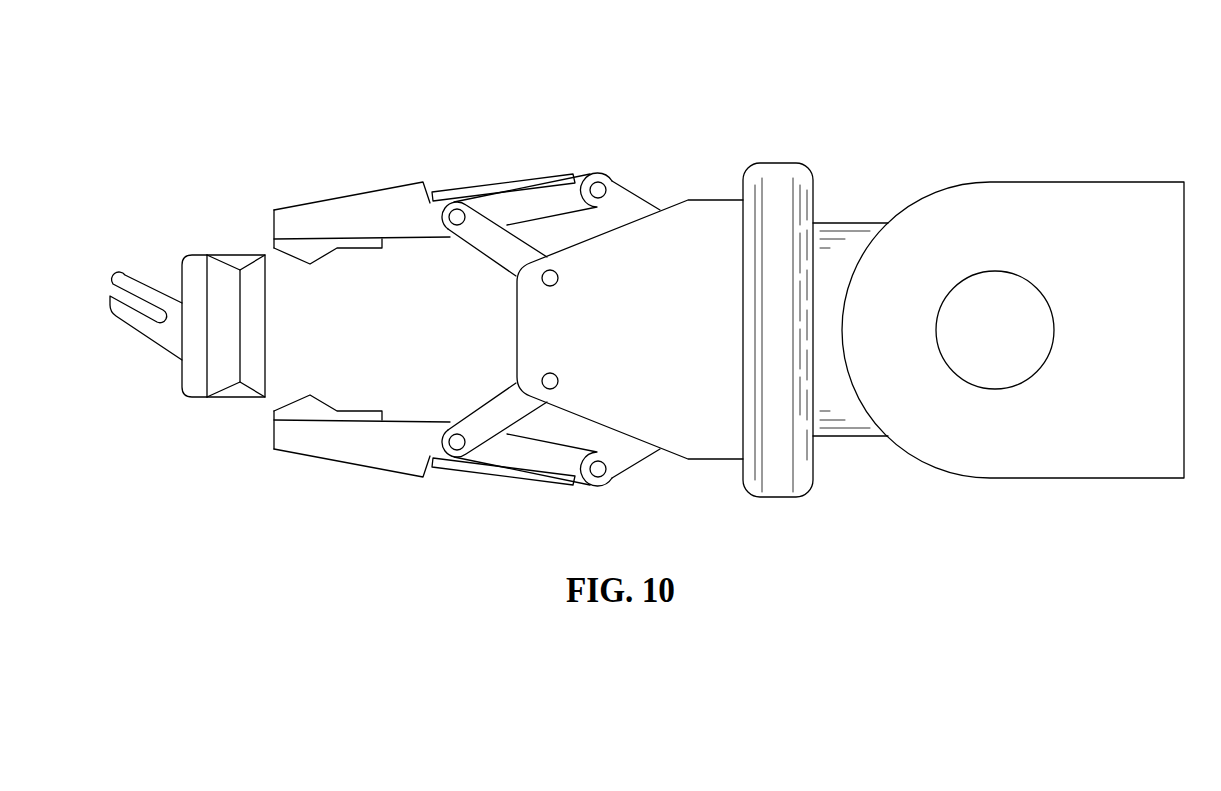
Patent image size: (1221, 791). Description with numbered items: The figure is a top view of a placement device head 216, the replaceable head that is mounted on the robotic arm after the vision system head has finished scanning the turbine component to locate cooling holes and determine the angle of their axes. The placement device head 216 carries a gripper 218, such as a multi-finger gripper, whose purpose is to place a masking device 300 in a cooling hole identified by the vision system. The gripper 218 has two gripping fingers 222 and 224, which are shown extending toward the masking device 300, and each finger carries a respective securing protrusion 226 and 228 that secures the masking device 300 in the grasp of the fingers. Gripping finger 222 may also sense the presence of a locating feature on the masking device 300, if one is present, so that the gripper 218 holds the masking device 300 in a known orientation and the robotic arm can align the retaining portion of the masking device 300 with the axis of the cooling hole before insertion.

The placement device head 216 is at (944, 131).
The gripper 218 is at (547, 173).
The gripping finger 222 is at (357, 192).
The gripping finger 224 is at (332, 462).
The securing protrusion 226 is at (308, 248).
The securing protrusion 228 is at (310, 412).
The masking device 300 is at (200, 255).